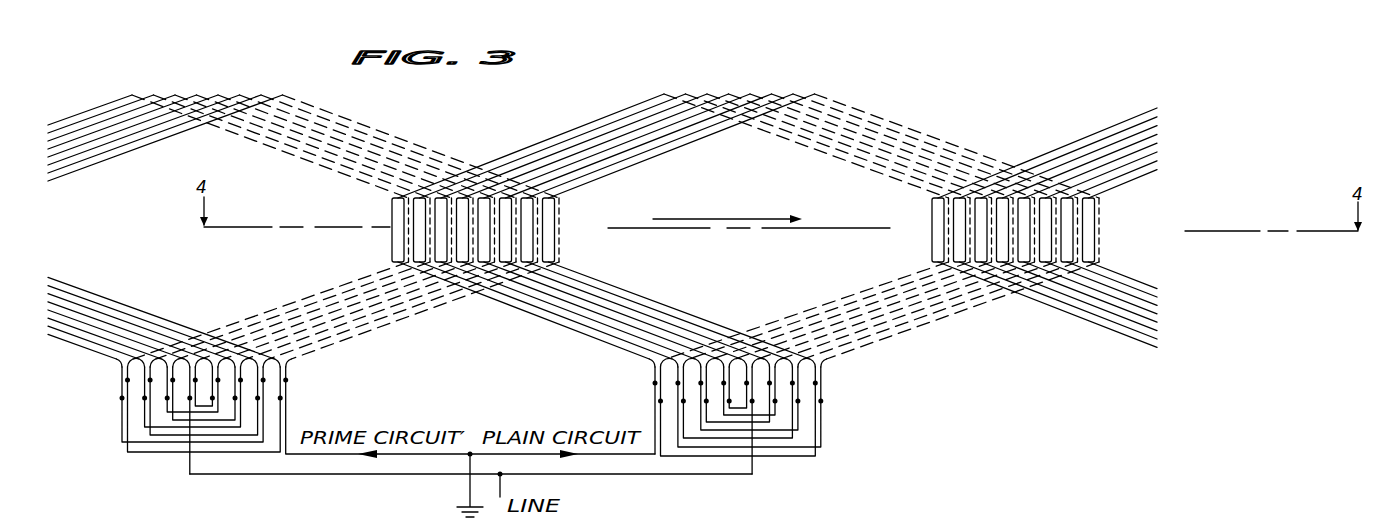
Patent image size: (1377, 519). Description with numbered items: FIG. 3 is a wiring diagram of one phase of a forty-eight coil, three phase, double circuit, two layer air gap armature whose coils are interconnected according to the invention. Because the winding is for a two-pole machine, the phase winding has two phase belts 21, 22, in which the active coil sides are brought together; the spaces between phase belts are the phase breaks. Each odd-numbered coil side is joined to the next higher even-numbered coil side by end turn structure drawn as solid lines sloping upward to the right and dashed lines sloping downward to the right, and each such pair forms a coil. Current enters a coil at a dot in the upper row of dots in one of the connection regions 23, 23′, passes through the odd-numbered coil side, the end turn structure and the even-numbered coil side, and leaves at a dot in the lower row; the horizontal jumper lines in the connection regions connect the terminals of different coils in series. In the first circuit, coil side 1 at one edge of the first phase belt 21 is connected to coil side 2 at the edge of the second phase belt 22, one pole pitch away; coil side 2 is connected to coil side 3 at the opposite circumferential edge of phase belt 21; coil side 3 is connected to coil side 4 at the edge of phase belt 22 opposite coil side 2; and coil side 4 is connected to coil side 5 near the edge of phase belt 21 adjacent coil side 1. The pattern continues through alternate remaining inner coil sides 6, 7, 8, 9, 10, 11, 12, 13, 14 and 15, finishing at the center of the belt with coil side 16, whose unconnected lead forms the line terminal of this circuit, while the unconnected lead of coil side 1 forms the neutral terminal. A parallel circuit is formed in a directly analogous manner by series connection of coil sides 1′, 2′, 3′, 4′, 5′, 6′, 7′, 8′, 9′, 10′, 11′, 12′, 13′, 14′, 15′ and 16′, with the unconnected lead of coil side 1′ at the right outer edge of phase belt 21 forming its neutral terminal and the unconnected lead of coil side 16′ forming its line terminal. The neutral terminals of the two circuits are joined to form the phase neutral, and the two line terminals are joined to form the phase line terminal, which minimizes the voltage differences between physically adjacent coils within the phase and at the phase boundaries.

The coil side 1 is at (393, 206).
The coil side 1′ is at (556, 204).
The coil side 2 is at (932, 222).
The coil side 2′ is at (1097, 221).
The coil side 3 is at (556, 219).
The coil side 3′ is at (395, 226).
The coil side 4 is at (1097, 205).
The coil side 4′ is at (932, 206).
The coil side 5 is at (397, 242).
The coil side 5′ is at (527, 235).
The coil side 6 is at (932, 254).
The coil side 6′ is at (1097, 254).
The coil side 7 is at (522, 256).
The coil side 7′ is at (423, 253).
The coil side 8 is at (1097, 237).
The coil side 8′ is at (932, 238).
The coil side 9 is at (433, 213).
The coil side 9′ is at (517, 253).
The coil side 10 is at (977, 207).
The coil side 10′ is at (1020, 262).
The coil side 11 is at (503, 253).
The coil side 11′ is at (447, 223).
The coil side 12 is at (1035, 262).
The coil side 12′ is at (965, 203).
The coil side 13 is at (462, 220).
The coil side 13′ is at (493, 257).
The coil side 14 is at (1003, 210).
The coil side 14′ is at (990, 262).
The coil side 15 is at (485, 257).
The coil side 15′ is at (467, 223).
The coil side 16 is at (1005, 262).
The coil side 16′ is at (990, 207).
The phase belt 21 is at (617, 215).
The phase belt 22 is at (1175, 215).
The connection region 23 is at (640, 396).
The connection region 23′ is at (105, 396).